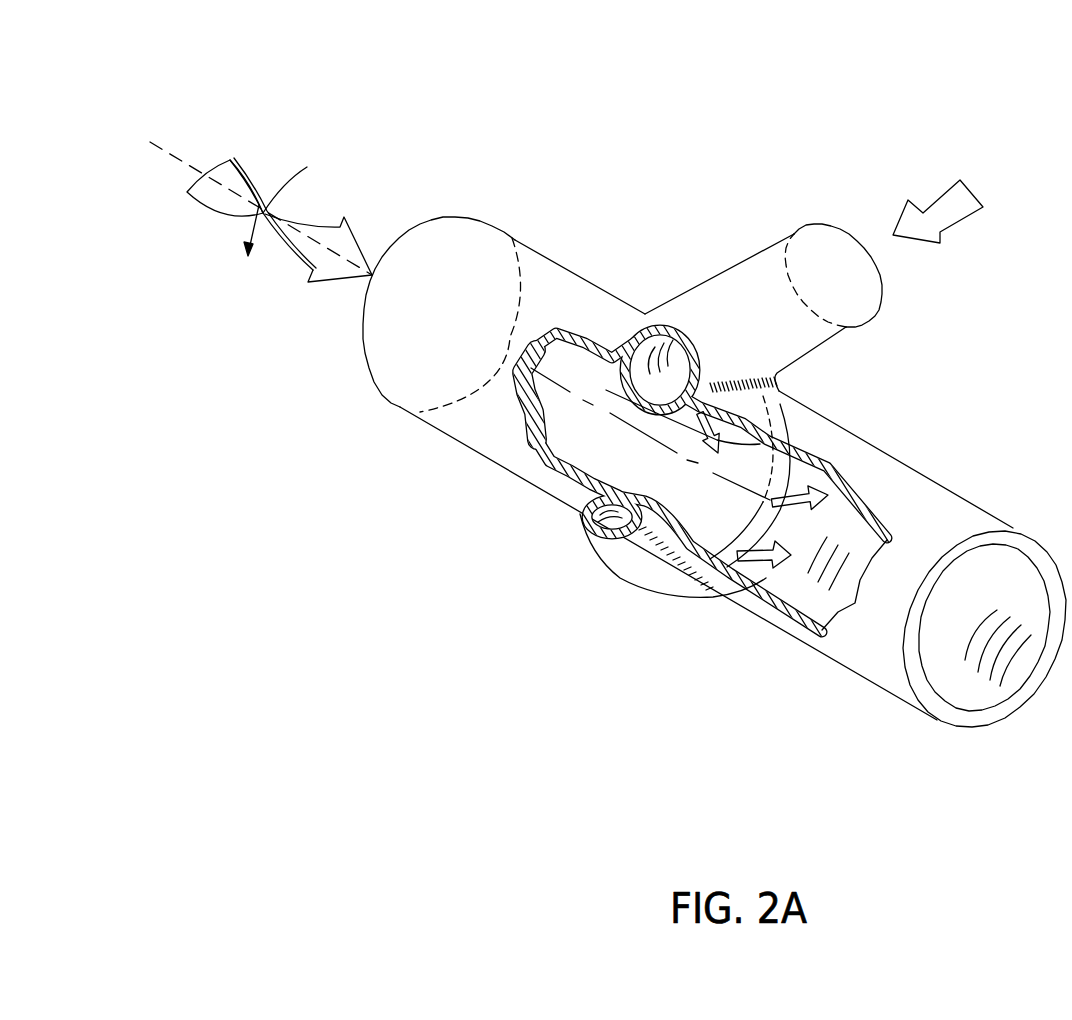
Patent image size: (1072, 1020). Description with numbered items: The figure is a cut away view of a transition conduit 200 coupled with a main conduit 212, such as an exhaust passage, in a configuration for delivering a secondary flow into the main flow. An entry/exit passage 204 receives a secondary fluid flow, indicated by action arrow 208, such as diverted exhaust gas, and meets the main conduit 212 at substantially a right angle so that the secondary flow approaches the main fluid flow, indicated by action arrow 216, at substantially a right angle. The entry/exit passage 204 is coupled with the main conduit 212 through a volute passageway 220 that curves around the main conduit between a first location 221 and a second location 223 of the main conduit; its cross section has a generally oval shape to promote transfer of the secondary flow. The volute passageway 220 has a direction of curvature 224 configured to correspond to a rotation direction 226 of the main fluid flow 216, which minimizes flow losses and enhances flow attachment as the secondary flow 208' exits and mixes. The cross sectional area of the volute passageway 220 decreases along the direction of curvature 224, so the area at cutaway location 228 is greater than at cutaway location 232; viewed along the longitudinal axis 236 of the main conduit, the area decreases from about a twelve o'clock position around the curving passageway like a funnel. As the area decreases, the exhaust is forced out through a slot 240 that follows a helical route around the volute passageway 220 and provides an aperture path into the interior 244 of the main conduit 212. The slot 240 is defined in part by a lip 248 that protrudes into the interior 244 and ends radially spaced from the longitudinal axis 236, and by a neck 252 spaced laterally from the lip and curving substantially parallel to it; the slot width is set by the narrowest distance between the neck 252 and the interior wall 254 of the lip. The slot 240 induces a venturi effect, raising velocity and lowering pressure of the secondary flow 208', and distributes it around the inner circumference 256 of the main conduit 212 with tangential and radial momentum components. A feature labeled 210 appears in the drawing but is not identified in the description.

The transition conduit 200 is at (667, 158).
The entry/exit passage 204 is at (763, 248).
The secondary fluid flow 208 is at (926, 182).
The secondary flow exiting the volute passageway 208' is at (826, 477).
The chamber 210 is at (733, 551).
The main conduit 212 is at (590, 283).
The main fluid flow 216 is at (245, 166).
The volute passageway 220 is at (672, 325).
The first location 221 is at (520, 240).
The second location 223 is at (983, 508).
The direction of curvature 224 is at (604, 598).
The rotation direction 226 is at (247, 227).
The cutaway location 228 is at (636, 328).
The cutaway location 232 is at (580, 510).
The longitudinal axis 236 is at (178, 152).
The slot 240 is at (735, 340).
The interior of the main conduit 244 is at (547, 401).
The lip 248 is at (600, 391).
The neck 252 is at (770, 412).
The interior wall 254 is at (590, 527).
The inner circumference 256 is at (735, 578).